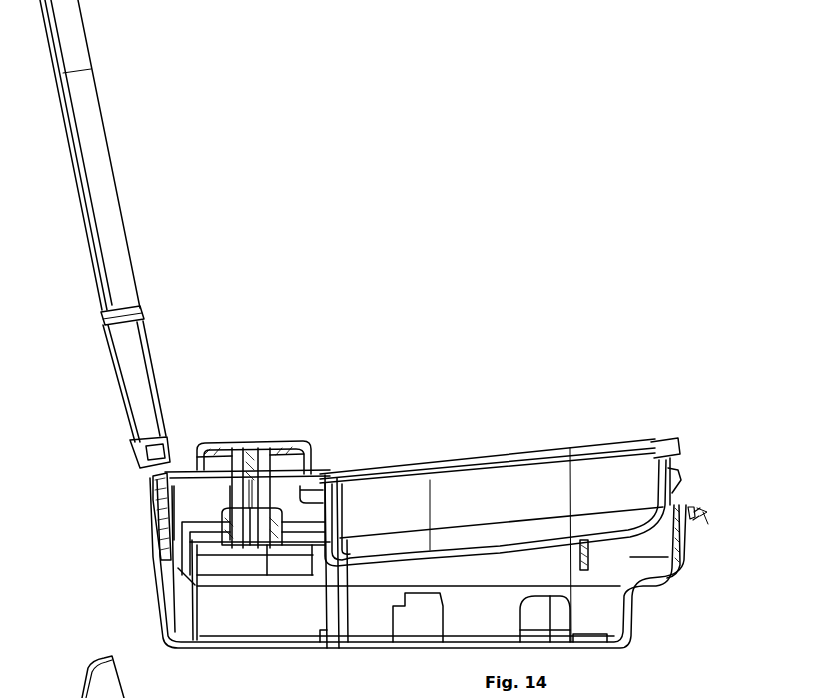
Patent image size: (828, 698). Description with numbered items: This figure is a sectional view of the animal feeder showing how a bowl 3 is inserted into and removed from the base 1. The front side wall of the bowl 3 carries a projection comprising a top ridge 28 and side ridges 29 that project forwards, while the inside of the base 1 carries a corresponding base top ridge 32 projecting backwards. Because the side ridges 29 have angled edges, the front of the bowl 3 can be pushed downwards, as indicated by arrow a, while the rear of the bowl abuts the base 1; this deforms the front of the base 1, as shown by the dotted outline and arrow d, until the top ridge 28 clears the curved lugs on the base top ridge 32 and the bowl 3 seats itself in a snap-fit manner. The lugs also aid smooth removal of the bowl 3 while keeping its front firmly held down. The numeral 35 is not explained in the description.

The base 1 is at (680, 566).
The bowl 3 is at (538, 451).
The top ridge 28 is at (673, 485).
The side ridges 29 is at (703, 478).
The base top ridge 32 is at (687, 513).
The side wall 35 is at (683, 545).
The arrow a is at (704, 372).
The arrow d is at (722, 512).